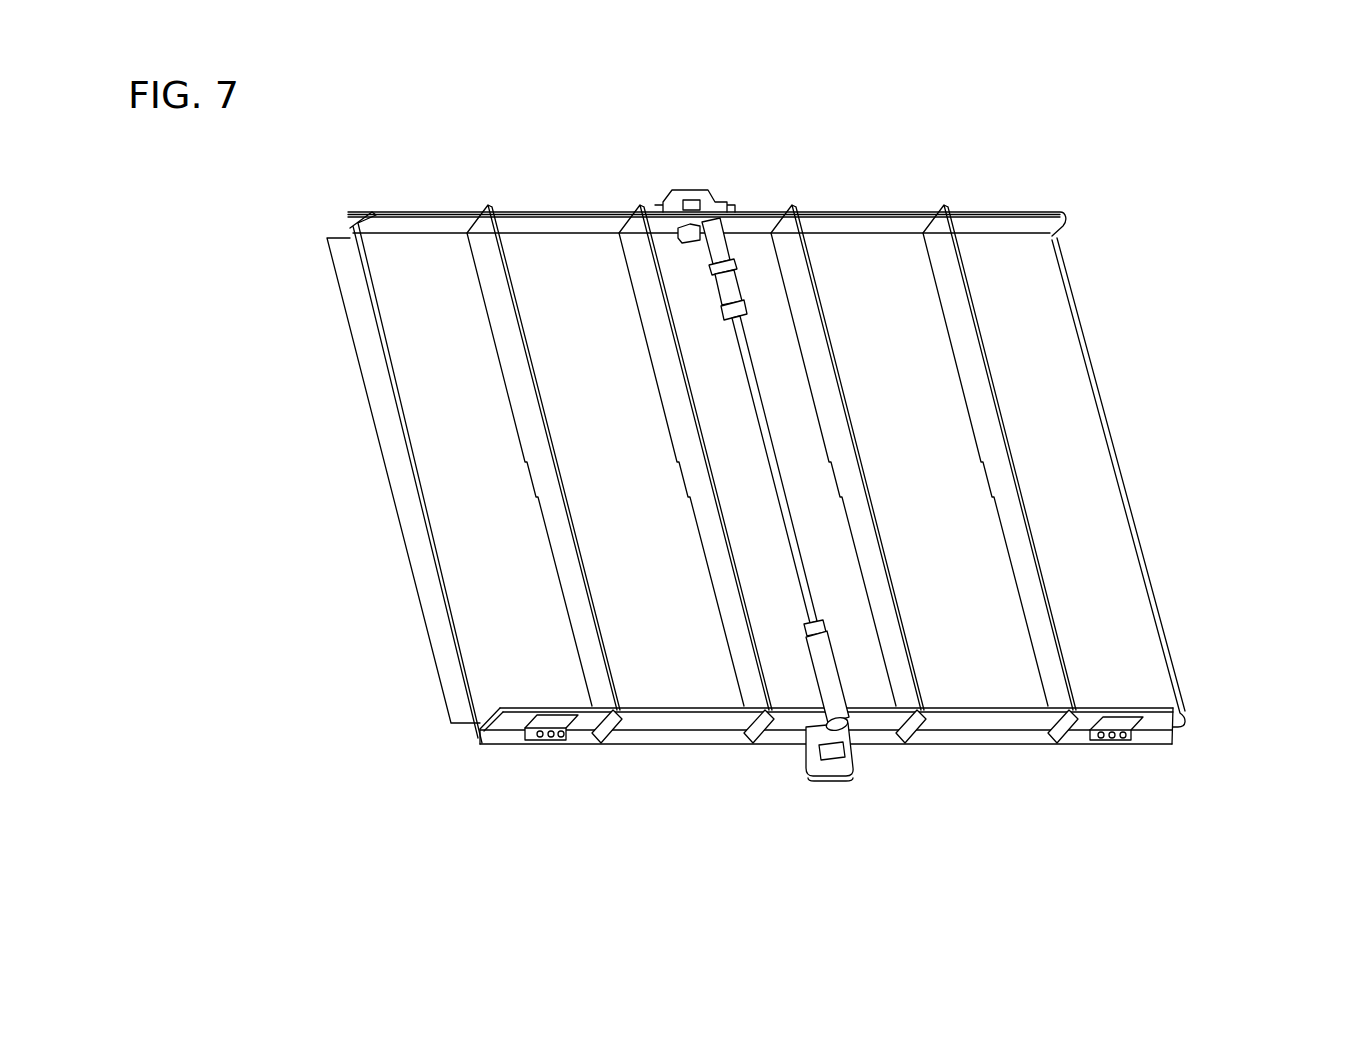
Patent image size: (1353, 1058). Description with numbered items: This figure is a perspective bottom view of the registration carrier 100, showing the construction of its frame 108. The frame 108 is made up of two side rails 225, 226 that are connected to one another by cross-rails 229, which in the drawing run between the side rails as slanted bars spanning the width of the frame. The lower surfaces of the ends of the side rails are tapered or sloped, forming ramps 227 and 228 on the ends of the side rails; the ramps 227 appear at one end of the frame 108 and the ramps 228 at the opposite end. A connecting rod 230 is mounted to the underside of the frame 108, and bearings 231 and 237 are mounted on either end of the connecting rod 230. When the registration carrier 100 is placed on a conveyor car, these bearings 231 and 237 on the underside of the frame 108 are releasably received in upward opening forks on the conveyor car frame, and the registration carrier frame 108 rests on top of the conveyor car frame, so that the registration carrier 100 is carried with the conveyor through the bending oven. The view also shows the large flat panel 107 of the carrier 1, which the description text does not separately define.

The panel unit 1 is at (809, 472).
The registration carrier 100 is at (730, 452).
The panel plate 107 is at (1038, 302).
The frame 108 is at (976, 198).
The side rail 225 is at (550, 224).
The side rail 226 is at (866, 775).
The ramp 227 is at (373, 213).
The ramp 228 is at (1178, 727).
The cross-rail 229 is at (699, 477).
The connecting rod 230 is at (778, 370).
The bearing 231 is at (718, 248).
The bearing 237 is at (835, 680).